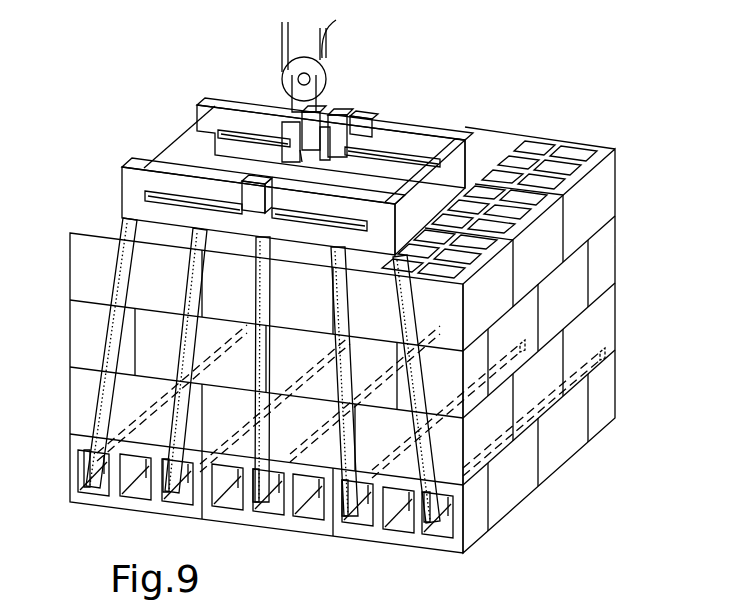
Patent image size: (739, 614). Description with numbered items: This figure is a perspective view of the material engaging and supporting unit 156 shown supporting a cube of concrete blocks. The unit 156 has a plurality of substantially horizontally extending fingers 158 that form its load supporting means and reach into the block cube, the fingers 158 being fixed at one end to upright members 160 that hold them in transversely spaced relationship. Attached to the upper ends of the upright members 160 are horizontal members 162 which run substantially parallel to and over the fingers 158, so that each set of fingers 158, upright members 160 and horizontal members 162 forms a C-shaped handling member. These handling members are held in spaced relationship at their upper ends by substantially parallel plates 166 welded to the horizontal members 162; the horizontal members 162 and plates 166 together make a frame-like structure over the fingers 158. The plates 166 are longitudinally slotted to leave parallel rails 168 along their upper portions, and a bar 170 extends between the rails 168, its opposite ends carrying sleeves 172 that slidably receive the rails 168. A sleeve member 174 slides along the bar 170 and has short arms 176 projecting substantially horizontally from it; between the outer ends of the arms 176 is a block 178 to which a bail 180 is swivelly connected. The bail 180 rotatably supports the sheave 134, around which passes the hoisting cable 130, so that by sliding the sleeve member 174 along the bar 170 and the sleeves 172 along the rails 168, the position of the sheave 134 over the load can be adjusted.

The hoisting cable 130 is at (283, 43).
The sheave 134 is at (346, 31).
The unit 156 is at (276, 288).
The fingers 158 is at (140, 414).
The upright members 160 is at (118, 276).
The horizontal members 162 is at (196, 106).
The plates 166 is at (348, 250).
The rails 168 is at (245, 120).
The bar 170 is at (330, 128).
The sleeves 172 is at (242, 192).
The sleeve member 174 is at (365, 118).
The arms 176 is at (285, 120).
The block 178 is at (300, 113).
The bail 180 is at (310, 78).